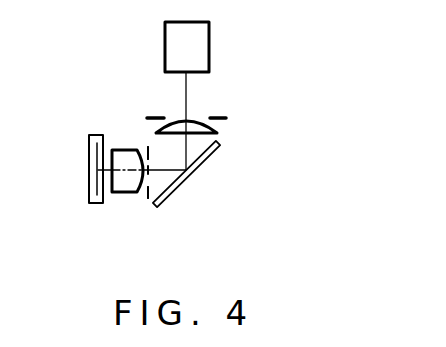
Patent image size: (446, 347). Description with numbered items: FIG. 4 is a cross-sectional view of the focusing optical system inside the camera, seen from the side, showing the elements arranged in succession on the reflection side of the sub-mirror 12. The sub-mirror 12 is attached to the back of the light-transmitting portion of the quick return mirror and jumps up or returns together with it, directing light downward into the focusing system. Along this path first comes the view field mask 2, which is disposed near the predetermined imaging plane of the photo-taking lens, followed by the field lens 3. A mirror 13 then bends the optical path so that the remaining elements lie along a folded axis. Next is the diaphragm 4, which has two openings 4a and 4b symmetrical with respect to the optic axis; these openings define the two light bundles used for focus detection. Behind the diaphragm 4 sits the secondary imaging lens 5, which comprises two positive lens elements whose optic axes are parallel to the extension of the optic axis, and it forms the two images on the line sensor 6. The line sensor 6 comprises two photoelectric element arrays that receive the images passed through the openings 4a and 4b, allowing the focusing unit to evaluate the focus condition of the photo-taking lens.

The sub-mirror 12 is at (203, 52).
The view field mask 2 is at (218, 117).
The field lens 3 is at (219, 130).
The mirror 13 is at (211, 160).
The line sensor 6 is at (95, 134).
The secondary imaging lens 5 is at (118, 195).
The diaphragm 4 is at (149, 196).
The opening 4a is at (153, 153).
The opening 4b is at (150, 183).